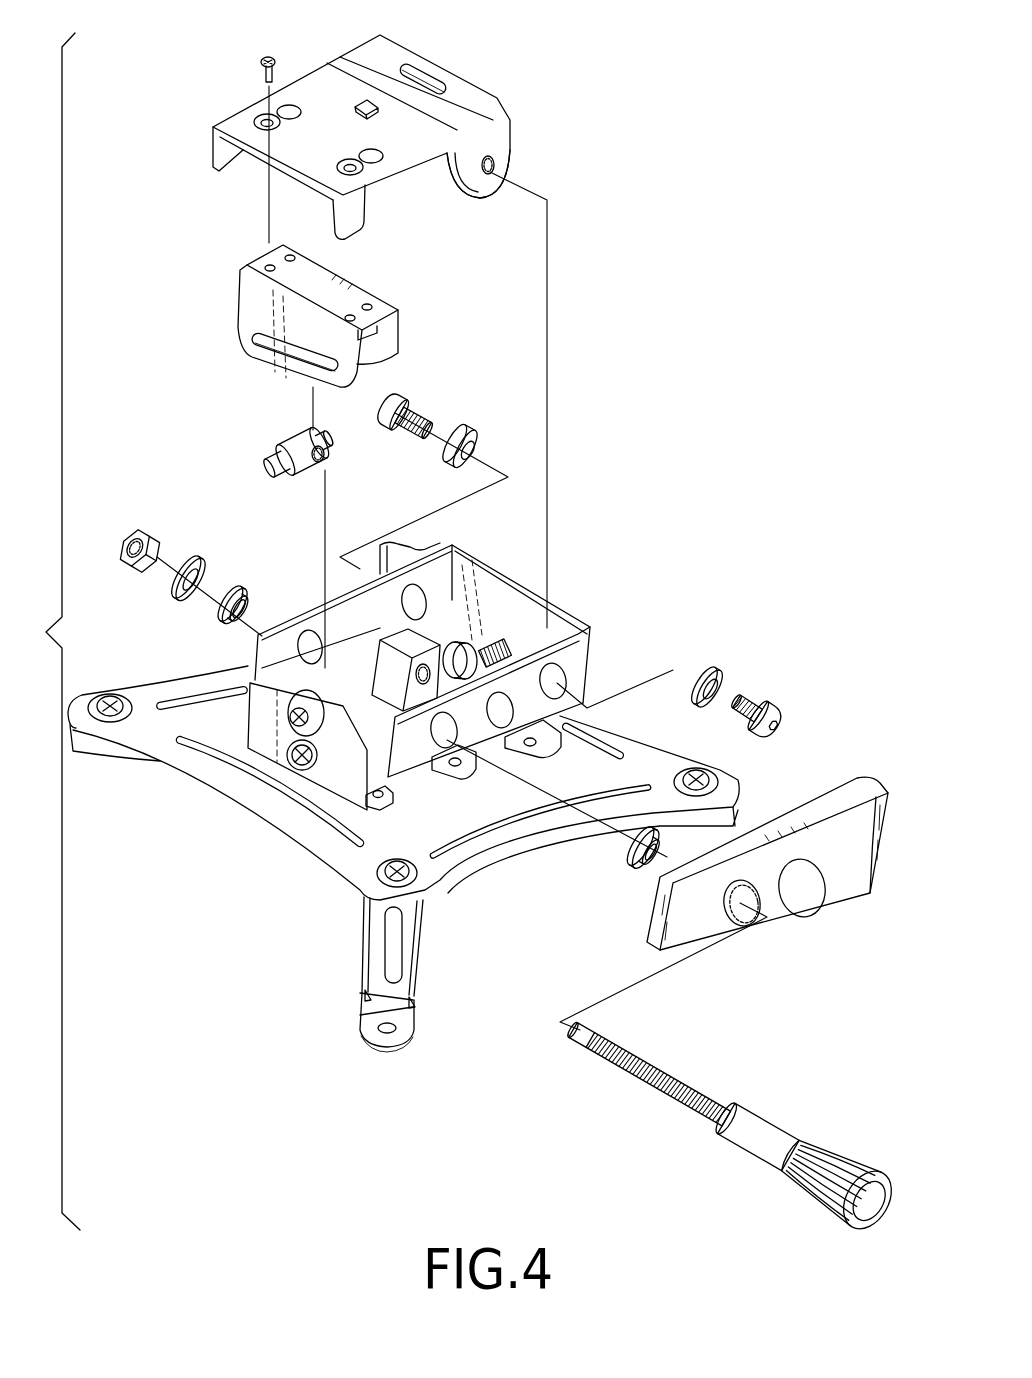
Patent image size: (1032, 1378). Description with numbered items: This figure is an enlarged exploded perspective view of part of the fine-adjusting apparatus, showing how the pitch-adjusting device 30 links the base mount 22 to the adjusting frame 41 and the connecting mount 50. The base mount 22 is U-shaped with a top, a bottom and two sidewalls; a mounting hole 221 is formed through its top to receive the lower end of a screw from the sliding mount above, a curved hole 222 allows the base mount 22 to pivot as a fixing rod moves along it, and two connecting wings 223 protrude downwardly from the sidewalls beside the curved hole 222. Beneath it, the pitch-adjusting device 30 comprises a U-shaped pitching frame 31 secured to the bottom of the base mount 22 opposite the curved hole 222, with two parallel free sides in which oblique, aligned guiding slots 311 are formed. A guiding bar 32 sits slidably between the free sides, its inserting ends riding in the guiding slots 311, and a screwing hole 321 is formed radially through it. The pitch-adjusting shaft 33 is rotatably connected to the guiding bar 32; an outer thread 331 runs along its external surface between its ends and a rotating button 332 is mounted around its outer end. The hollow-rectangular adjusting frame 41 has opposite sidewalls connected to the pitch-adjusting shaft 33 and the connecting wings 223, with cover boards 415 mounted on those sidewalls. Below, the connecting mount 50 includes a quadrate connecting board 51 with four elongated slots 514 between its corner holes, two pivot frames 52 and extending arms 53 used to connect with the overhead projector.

The base mount 22 is at (398, 123).
The mounting hole 221 is at (364, 106).
The curved hole 222 is at (417, 70).
The connecting wings 223 is at (490, 138).
The pitch-adjusting device 30 is at (254, 370).
The pitching frame 31 is at (287, 316).
The guiding slots 311 is at (257, 350).
The guiding bar 32 is at (311, 446).
The screwing hole 321 is at (323, 460).
The pitch-adjusting shaft 33 is at (728, 1121).
The outer thread 331 is at (648, 1073).
The rotating button 332 is at (804, 1163).
The adjusting frame 41 is at (487, 577).
The cover boards 415 is at (858, 790).
The connecting mount 50 is at (403, 859).
The connecting board 51 is at (403, 798).
The elongated slots 514 is at (517, 815).
The pivot frames 52 is at (343, 793).
The extending arms 53 is at (410, 968).